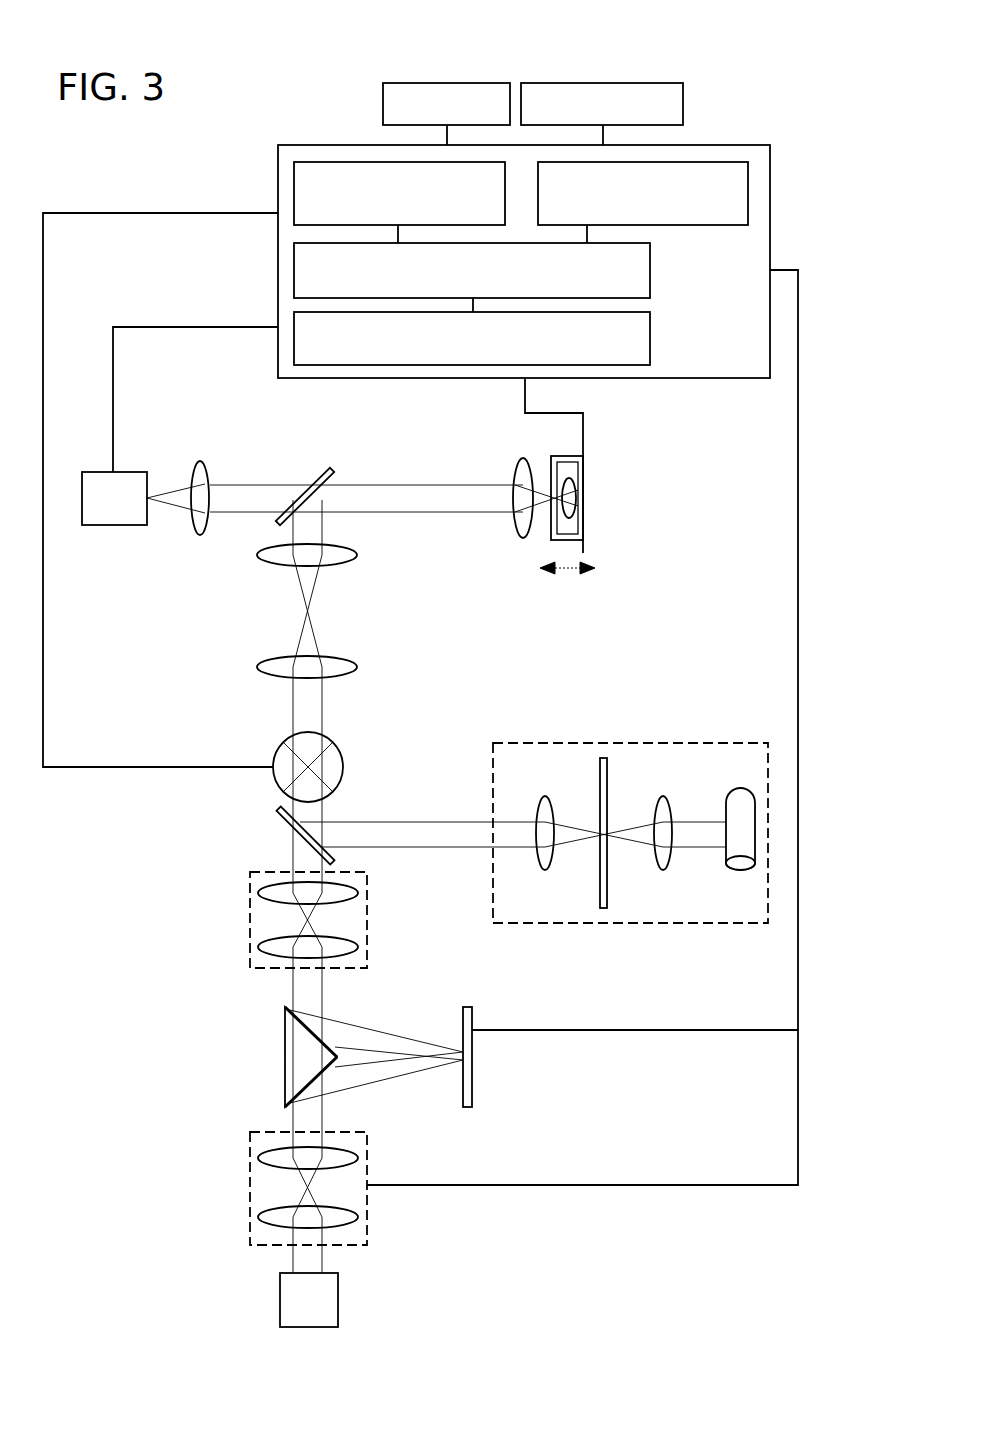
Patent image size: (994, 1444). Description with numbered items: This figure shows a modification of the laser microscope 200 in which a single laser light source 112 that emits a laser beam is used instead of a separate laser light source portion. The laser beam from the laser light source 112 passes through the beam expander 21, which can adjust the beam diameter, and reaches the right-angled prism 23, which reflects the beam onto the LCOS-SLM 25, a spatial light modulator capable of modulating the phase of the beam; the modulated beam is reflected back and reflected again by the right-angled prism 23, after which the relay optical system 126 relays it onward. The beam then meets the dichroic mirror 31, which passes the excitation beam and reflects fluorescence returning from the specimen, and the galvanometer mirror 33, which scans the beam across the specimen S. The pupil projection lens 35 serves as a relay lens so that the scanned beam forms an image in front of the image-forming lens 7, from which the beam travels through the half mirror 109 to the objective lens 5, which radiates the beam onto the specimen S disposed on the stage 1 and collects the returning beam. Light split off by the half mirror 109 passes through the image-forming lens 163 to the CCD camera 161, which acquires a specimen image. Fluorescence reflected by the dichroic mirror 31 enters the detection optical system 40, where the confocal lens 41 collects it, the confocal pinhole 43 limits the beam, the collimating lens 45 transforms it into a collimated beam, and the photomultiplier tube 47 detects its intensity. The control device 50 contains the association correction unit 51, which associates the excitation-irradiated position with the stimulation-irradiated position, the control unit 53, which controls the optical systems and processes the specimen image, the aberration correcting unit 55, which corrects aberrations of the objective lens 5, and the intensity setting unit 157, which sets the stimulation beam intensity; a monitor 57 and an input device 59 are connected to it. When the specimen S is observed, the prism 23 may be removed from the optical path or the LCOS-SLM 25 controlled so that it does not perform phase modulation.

The stage 1 is at (585, 549).
The objective lens 5 is at (514, 532).
The image-forming lens 7 is at (257, 555).
The beam expander 21 is at (250, 1188).
The right-angled prism 23 is at (284, 1058).
The LCOS-SLM 25 is at (473, 1092).
The dichroic mirror 31 is at (276, 822).
The galvanometer mirror 33 is at (277, 752).
The pupil projection lens 35 is at (258, 667).
The detection optical system 40 is at (700, 925).
The confocal lens 41 is at (545, 796).
The confocal pinhole 43 is at (607, 888).
The collimating lens 45 is at (663, 796).
The photomultiplier tube 47 is at (736, 788).
The control device 50 is at (278, 267).
The association correction unit 51 is at (294, 188).
The control unit 53 is at (650, 269).
The aberration correcting unit 55 is at (650, 337).
The monitor 57 is at (383, 106).
The input device 59 is at (683, 103).
The half mirror 109 is at (322, 468).
The laser light source 112 is at (280, 1300).
The relay optical system 126 is at (250, 918).
The intensity setting unit 157 is at (748, 192).
The CCD camera 161 is at (95, 472).
The image-forming lens 163 is at (200, 461).
The laser microscope 200 is at (677, 1232).
The specimen S is at (585, 497).